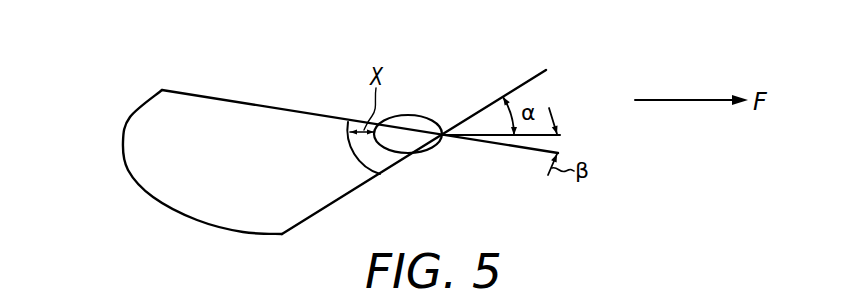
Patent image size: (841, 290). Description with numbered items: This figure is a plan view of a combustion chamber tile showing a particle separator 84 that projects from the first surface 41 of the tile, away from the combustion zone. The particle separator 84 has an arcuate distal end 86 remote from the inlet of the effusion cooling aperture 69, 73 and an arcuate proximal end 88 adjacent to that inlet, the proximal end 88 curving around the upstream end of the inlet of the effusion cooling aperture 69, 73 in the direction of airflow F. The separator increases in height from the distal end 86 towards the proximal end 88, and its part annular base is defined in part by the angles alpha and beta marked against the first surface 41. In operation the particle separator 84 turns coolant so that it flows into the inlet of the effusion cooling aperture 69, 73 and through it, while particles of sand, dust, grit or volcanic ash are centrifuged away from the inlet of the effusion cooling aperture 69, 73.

The first surface 41 is at (523, 64).
The particle separator 84 is at (260, 117).
The distal end 86 is at (158, 150).
The proximal end 88 is at (348, 173).
The effusion cooling aperture 69 is at (443, 174).
The effusion cooling aperture 73 is at (415, 140).